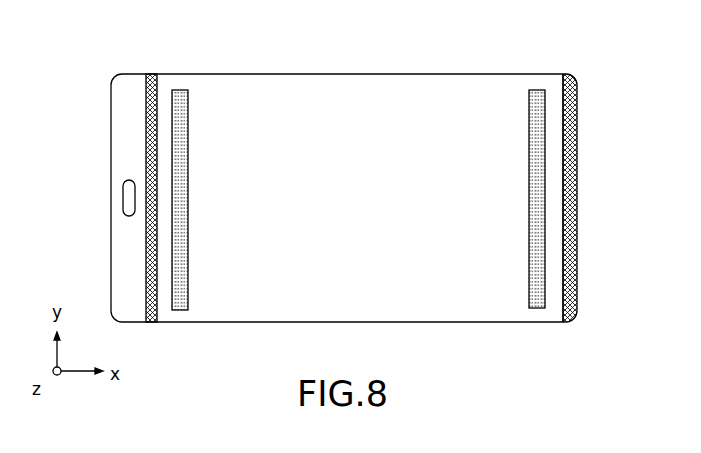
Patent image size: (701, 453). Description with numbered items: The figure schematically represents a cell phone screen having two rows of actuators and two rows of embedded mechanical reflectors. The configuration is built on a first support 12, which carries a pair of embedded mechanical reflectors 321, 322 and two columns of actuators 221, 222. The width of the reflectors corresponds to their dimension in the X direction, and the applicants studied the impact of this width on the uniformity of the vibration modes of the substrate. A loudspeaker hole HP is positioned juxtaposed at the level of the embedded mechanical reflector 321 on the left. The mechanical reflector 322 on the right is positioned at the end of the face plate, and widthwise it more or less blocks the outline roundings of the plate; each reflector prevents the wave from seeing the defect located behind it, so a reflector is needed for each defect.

The first support 12 is at (379, 117).
The column of actuators 221 is at (182, 92).
The column of actuators 222 is at (535, 309).
The embedded mechanical reflector 321 is at (150, 99).
The embedded mechanical reflector 322 is at (577, 173).
The loudspeaker hole HP is at (122, 200).